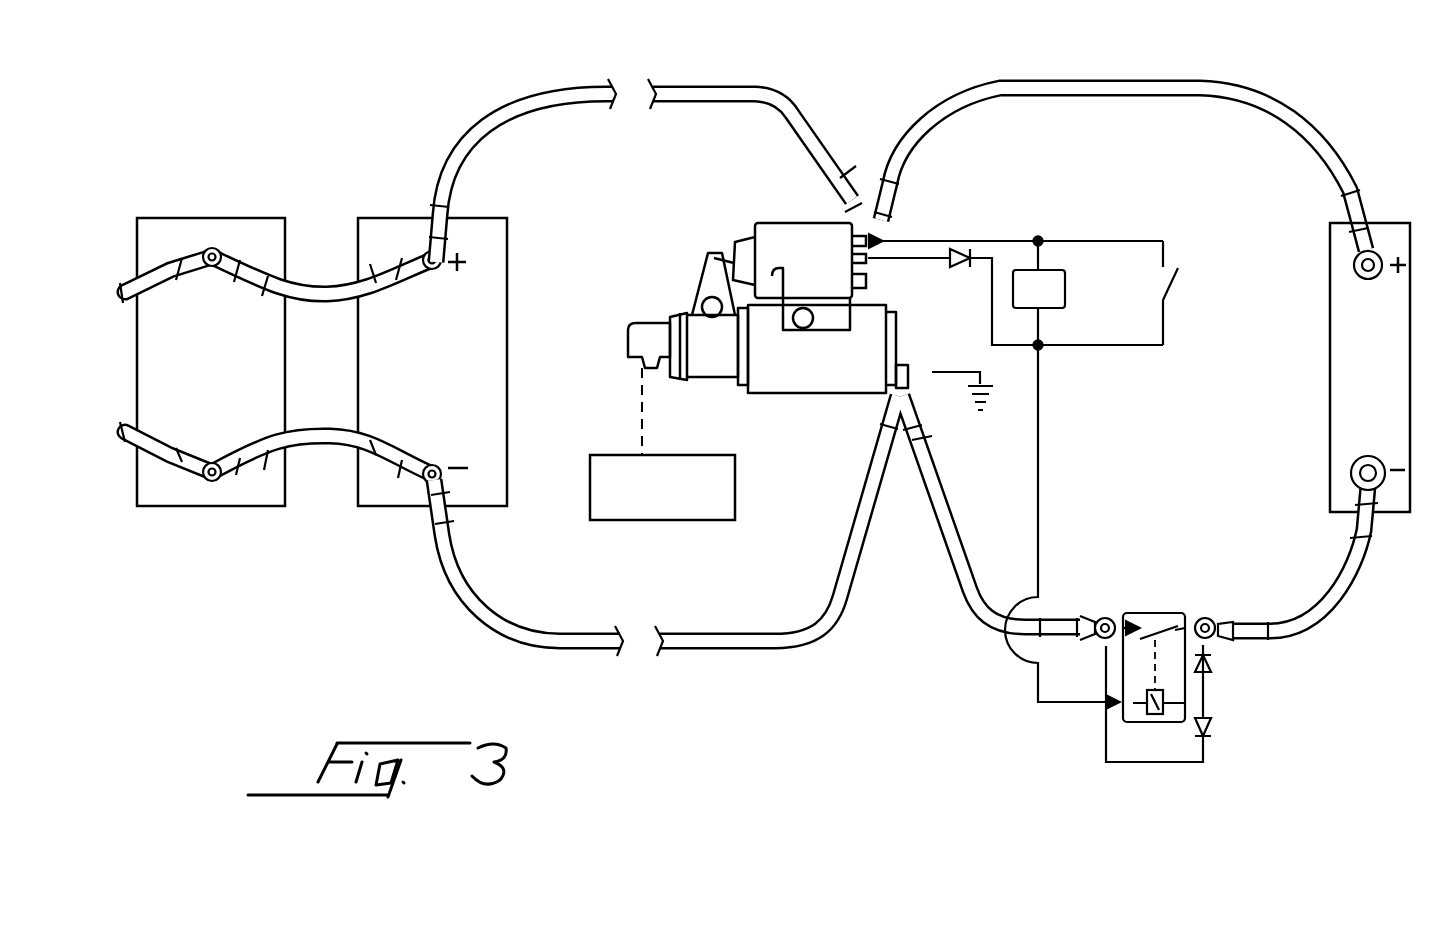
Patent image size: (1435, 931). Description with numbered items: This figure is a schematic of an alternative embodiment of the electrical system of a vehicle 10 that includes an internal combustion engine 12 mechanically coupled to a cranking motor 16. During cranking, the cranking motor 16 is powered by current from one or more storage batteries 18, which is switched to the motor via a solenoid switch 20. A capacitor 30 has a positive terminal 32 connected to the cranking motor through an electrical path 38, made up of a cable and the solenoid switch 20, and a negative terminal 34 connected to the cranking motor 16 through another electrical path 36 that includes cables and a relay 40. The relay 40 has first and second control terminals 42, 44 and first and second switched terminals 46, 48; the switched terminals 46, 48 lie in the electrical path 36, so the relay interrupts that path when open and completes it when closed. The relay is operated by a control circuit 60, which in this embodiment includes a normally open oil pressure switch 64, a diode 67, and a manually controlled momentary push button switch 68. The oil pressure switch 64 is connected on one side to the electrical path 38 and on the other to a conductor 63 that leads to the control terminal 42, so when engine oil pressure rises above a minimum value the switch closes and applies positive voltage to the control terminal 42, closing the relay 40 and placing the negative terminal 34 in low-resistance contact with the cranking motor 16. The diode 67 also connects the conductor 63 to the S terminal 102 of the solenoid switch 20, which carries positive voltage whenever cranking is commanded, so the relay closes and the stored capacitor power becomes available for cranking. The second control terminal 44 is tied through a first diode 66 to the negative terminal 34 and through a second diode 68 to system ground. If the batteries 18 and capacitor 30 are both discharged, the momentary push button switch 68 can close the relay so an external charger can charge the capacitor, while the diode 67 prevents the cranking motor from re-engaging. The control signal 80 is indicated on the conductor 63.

The vehicle 10 is at (652, 184).
The internal combustion engine 12 is at (645, 520).
The cranking motor 16 is at (797, 420).
The storage batteries 18 is at (203, 214).
The solenoid switch 20 is at (790, 223).
The capacitor 30 is at (1350, 352).
The positive terminal 32 is at (1356, 260).
The negative terminal 34 is at (1355, 470).
The electrical path 36 is at (1325, 628).
The electrical path 38 is at (1160, 80).
The relay 40 is at (1150, 612).
The first control terminal 42 is at (1118, 702).
The second control terminal 44 is at (1193, 705).
The first switched terminal 46 is at (1106, 618).
The second switched terminal 48 is at (1208, 618).
The control circuit 60 is at (1100, 362).
The conductor 63 is at (1045, 440).
The normally open oil pressure switch 64 is at (1068, 290).
The first diode 66 is at (1215, 662).
The diode 67 is at (958, 272).
The manually controlled momentary push button switch 68 is at (1180, 270).
The control signal 80 is at (1056, 500).
The S terminal 102 is at (872, 262).